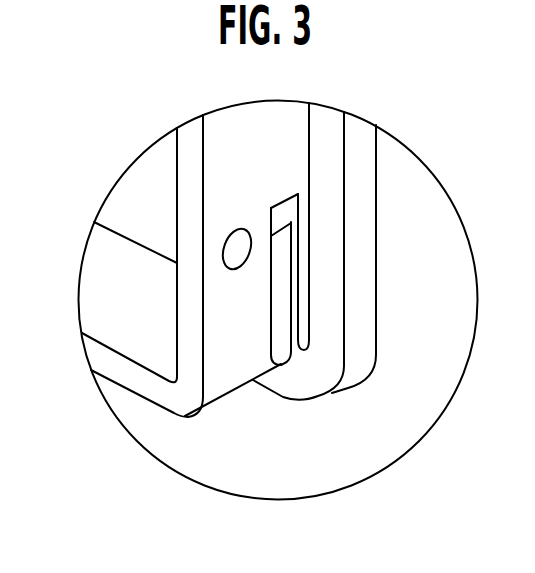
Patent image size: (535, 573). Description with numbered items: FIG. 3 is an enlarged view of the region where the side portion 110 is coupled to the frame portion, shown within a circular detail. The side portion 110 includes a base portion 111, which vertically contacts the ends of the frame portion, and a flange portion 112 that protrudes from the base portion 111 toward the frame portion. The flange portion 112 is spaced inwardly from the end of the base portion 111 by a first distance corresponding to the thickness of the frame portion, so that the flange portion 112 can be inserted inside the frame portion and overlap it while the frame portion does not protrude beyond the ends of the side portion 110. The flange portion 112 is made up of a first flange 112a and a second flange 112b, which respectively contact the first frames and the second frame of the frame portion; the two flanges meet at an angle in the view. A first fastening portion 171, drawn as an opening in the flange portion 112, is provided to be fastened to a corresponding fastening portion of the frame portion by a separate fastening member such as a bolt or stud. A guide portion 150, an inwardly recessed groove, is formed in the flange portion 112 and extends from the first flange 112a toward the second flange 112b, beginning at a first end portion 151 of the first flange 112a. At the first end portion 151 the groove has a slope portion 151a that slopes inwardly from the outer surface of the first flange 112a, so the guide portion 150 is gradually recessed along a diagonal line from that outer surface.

The side portion 110 is at (382, 159).
The base portion 111 is at (363, 328).
The flange portion 112 is at (192, 537).
The first flange 112a is at (228, 368).
The second flange 112b is at (147, 342).
The guide portion 150 is at (283, 297).
The first end portion 151 is at (287, 198).
The slope portion 151a is at (296, 214).
The first fastening portion 171 is at (237, 247).